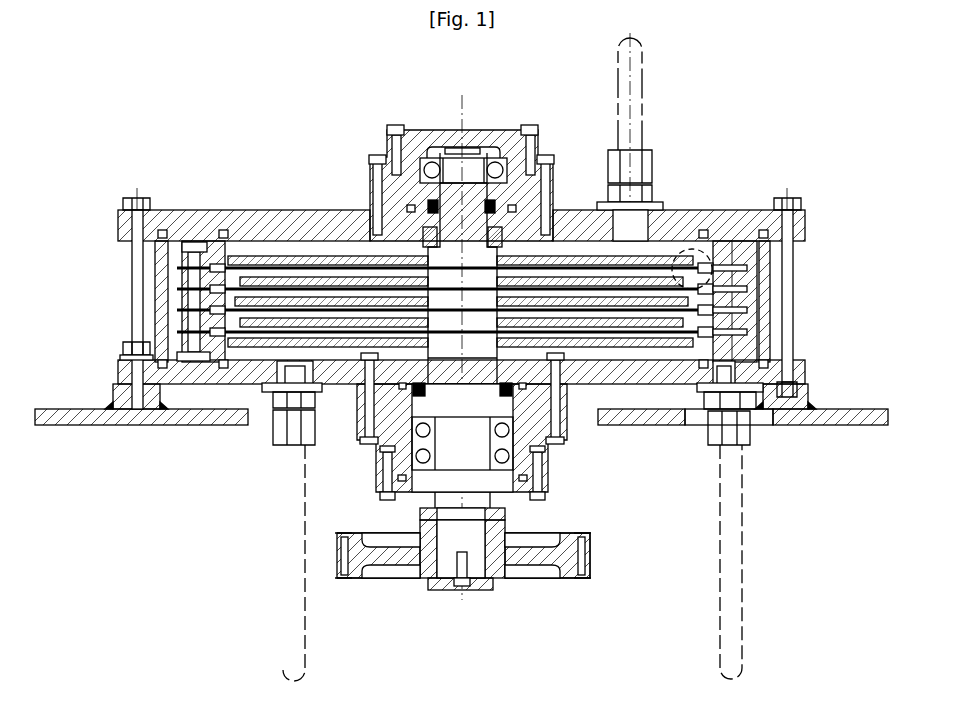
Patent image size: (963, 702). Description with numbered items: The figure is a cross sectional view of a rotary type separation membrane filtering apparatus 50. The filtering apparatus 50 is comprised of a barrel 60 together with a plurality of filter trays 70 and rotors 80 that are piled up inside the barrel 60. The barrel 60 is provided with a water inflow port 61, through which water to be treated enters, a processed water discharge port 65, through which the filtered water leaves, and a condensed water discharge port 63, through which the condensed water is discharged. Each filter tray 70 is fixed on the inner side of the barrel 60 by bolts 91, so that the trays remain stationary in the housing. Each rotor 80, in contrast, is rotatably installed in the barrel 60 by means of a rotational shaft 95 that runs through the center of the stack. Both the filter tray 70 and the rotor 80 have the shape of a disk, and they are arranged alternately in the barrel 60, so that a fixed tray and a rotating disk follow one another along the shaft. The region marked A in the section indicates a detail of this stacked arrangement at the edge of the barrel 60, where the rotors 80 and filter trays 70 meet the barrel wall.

The filtering apparatus 50 is at (197, 169).
The barrel 60 is at (162, 258).
The water inflow port 61 is at (285, 376).
The condensed water discharge port 63 is at (638, 213).
The processed water discharge port 65 is at (740, 376).
The filter tray 70 is at (258, 262).
The rotor 80 is at (308, 260).
The bolts 91 is at (192, 299).
The rotational shaft 95 is at (475, 452).
The detail region A is at (700, 259).